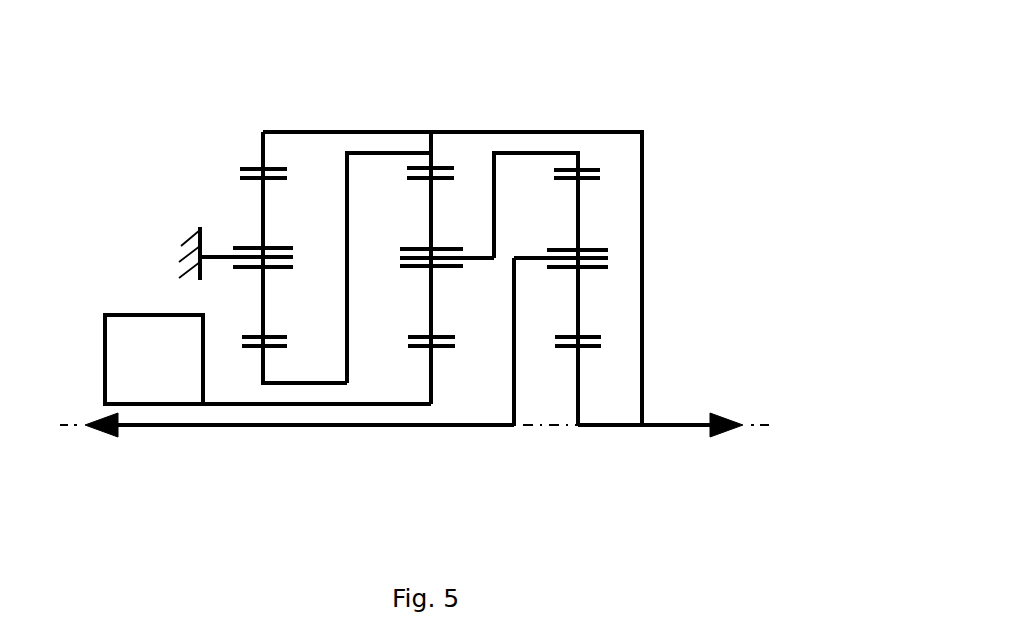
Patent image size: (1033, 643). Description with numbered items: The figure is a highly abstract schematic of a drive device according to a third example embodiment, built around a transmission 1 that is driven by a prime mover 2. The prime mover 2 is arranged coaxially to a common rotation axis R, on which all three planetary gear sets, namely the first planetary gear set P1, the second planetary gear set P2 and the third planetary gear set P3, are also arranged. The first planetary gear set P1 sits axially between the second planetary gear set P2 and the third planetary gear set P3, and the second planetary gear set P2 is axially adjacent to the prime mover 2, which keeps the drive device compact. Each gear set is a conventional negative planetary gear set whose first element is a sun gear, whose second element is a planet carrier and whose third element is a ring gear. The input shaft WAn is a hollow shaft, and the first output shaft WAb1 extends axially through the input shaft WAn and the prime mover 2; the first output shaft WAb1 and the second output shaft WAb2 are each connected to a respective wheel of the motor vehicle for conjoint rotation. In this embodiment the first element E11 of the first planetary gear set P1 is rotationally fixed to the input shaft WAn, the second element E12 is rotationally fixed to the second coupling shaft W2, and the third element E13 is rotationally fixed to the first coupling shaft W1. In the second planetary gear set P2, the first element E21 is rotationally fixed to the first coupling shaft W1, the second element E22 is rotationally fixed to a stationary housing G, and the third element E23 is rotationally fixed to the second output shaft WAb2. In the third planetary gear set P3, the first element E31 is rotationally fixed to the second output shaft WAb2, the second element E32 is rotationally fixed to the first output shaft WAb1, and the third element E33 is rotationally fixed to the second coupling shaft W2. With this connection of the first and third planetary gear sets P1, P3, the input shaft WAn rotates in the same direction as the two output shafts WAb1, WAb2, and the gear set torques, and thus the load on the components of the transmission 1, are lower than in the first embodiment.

The transmission 1 is at (112, 88).
The prime mover 2 is at (127, 323).
The housing G is at (185, 237).
The input shaft WAn is at (333, 427).
The first output shaft WAb1 is at (177, 430).
The second output shaft WAb2 is at (653, 430).
The first coupling shaft W1 is at (352, 150).
The second coupling shaft W2 is at (533, 150).
The rotation axis R is at (762, 427).
The first planetary gear set P1 is at (398, 437).
The second planetary gear set P2 is at (267, 431).
The third planetary gear set P3 is at (597, 117).
The first element of the first planetary gear set E11 is at (437, 377).
The second element of the first planetary gear set E12 is at (470, 257).
The third element of the first planetary gear set E13 is at (430, 150).
The first element of the second planetary gear set E21 is at (262, 368).
The second element of the second planetary gear set E22 is at (223, 253).
The third element of the second planetary gear set E23 is at (262, 158).
The first element of the third planetary gear set E31 is at (582, 383).
The second element of the third planetary gear set E32 is at (608, 258).
The third element of the third planetary gear set E33 is at (582, 161).